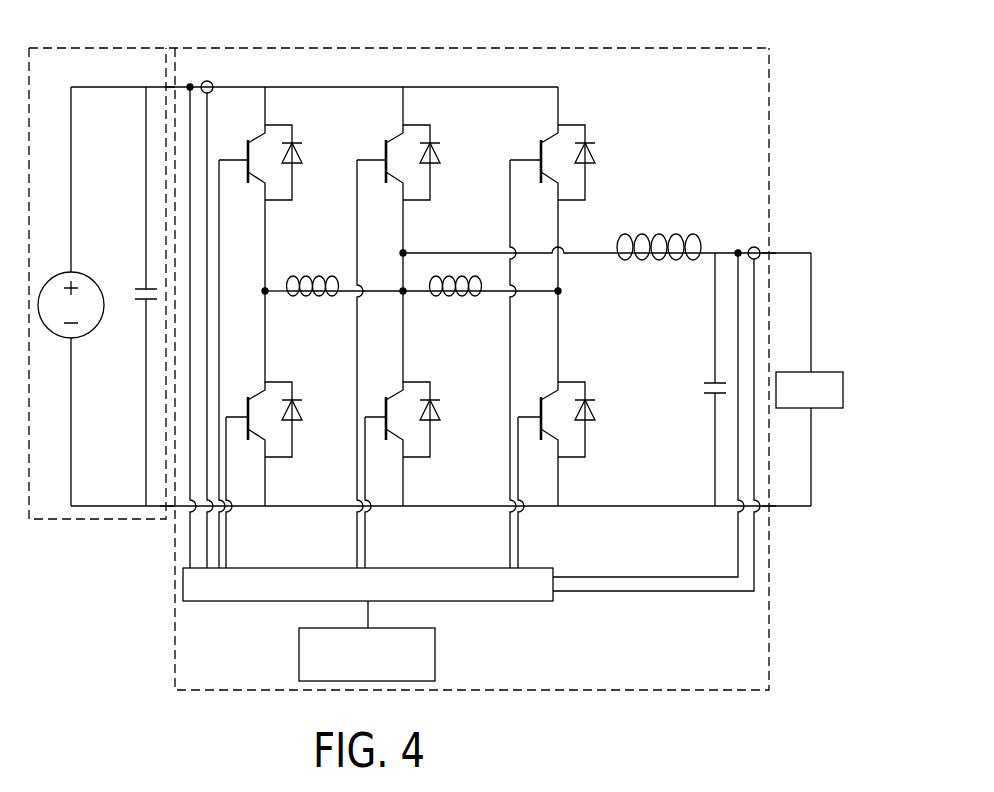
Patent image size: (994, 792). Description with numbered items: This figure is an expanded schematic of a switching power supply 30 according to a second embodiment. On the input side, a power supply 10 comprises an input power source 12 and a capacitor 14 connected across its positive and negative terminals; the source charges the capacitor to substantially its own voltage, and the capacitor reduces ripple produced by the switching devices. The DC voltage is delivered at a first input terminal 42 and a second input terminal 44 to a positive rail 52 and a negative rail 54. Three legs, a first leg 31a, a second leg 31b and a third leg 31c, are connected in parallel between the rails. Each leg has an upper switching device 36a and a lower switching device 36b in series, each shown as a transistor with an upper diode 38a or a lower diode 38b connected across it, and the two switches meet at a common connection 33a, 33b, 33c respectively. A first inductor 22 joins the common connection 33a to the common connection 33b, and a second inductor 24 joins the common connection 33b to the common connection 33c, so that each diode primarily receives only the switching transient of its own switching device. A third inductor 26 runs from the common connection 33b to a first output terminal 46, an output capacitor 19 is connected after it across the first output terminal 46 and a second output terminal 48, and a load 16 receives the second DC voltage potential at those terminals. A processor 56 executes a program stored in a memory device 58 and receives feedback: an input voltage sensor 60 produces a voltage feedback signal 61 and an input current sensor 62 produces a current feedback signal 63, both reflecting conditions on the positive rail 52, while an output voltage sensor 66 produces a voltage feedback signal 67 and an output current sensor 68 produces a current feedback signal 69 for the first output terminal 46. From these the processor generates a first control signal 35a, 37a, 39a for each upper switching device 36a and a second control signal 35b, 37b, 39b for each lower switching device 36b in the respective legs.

The power supply 10 is at (50, 46).
The input power source 12 is at (47, 290).
The capacitor 14 is at (139, 282).
The load 16 is at (843, 392).
The output capacitor 19 is at (711, 399).
The first inductor 22 is at (318, 280).
The second inductor 24 is at (446, 302).
The third inductor 26 is at (653, 233).
The switching power supply 30 is at (680, 48).
The first leg 31a is at (270, 83).
The second leg 31b is at (407, 83).
The third leg 31c is at (562, 83).
The common connection of the first leg 33a is at (258, 292).
The common connection of the second leg 33b is at (396, 287).
The common connection of the third leg 33c is at (568, 292).
The first control signal 35a is at (226, 535).
The second control signal 35b is at (220, 540).
The upper switching device 36a is at (262, 132).
The lower switching device 36b is at (258, 390).
The first control signal 37a is at (357, 545).
The second control signal 37b is at (365, 546).
The upper diode 38a is at (300, 135).
The lower diode 38b is at (299, 394).
The first control signal 39a is at (510, 545).
The second control signal 39b is at (518, 546).
The first input terminal 42 is at (172, 82).
The second input terminal 44 is at (170, 519).
The first output terminal 46 is at (774, 249).
The second output terminal 48 is at (778, 511).
The positive rail 52 is at (225, 86).
The negative rail 54 is at (298, 506).
The processor 56 is at (500, 601).
The memory device 58 is at (436, 655).
The voltage sensor 60 is at (190, 81).
The voltage feedback signal 61 is at (190, 210).
The current sensor 62 is at (212, 80).
The current feedback signal 63 is at (209, 112).
The voltage sensor 66 is at (738, 246).
The voltage feedback signal 67 is at (649, 577).
The current sensor 68 is at (754, 245).
The current feedback signal 69 is at (656, 591).